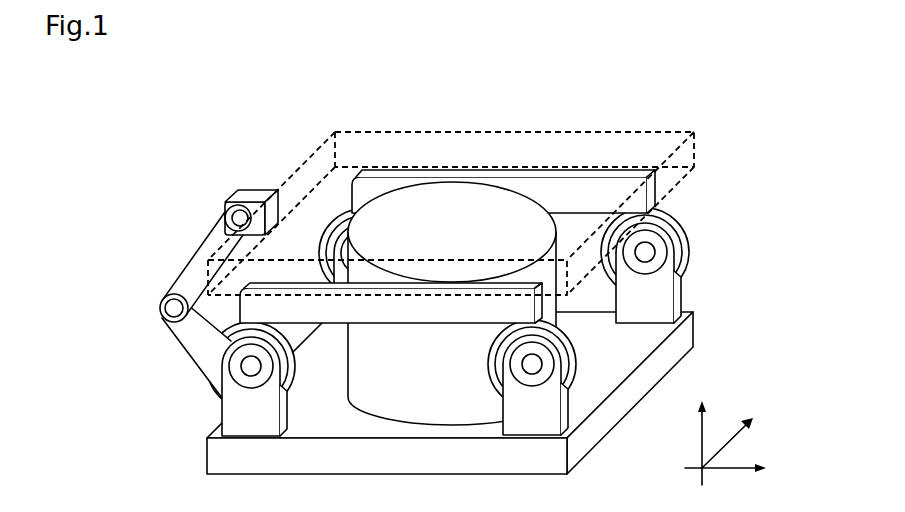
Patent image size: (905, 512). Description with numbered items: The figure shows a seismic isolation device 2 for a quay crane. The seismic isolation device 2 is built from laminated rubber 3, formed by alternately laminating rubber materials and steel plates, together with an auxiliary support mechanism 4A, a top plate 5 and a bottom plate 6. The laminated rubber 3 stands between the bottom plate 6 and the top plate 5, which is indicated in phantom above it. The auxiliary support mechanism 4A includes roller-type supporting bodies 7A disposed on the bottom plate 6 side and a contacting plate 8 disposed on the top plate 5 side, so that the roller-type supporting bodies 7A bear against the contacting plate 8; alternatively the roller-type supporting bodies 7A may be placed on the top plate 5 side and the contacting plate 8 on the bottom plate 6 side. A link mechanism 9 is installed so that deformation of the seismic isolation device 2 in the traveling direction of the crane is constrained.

The seismic isolation device 2 is at (162, 129).
The laminated rubber 3 is at (467, 231).
The auxiliary support mechanism 4A is at (722, 167).
The top plate 5 is at (322, 162).
The bottom plate 6 is at (592, 437).
The roller-type supporting bodies 7A is at (691, 238).
The contacting plate 8 is at (617, 187).
The link mechanism 9 is at (189, 278).